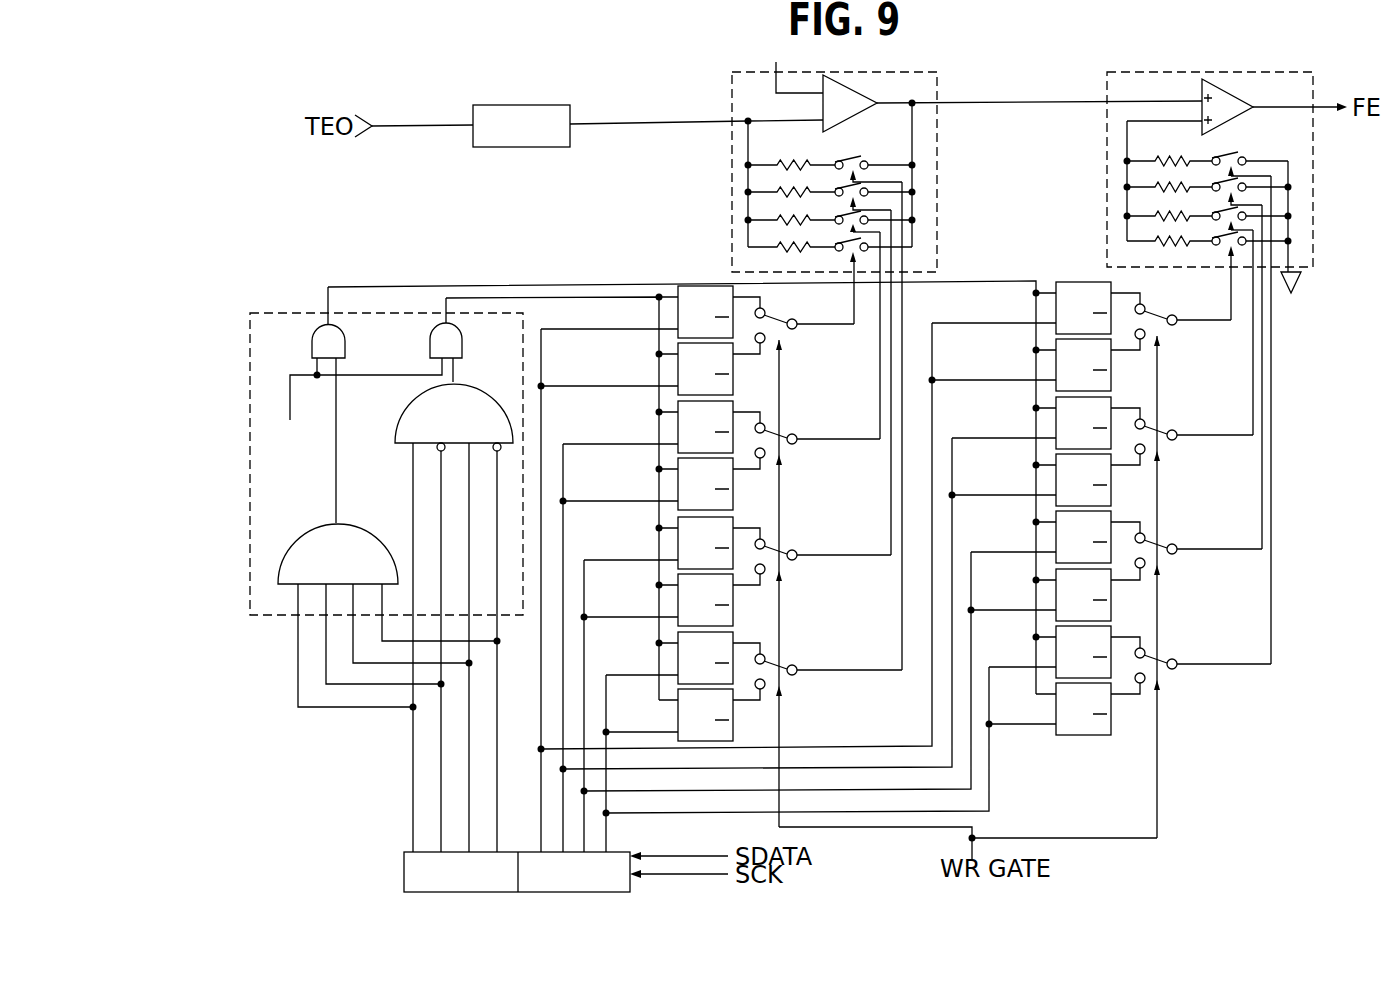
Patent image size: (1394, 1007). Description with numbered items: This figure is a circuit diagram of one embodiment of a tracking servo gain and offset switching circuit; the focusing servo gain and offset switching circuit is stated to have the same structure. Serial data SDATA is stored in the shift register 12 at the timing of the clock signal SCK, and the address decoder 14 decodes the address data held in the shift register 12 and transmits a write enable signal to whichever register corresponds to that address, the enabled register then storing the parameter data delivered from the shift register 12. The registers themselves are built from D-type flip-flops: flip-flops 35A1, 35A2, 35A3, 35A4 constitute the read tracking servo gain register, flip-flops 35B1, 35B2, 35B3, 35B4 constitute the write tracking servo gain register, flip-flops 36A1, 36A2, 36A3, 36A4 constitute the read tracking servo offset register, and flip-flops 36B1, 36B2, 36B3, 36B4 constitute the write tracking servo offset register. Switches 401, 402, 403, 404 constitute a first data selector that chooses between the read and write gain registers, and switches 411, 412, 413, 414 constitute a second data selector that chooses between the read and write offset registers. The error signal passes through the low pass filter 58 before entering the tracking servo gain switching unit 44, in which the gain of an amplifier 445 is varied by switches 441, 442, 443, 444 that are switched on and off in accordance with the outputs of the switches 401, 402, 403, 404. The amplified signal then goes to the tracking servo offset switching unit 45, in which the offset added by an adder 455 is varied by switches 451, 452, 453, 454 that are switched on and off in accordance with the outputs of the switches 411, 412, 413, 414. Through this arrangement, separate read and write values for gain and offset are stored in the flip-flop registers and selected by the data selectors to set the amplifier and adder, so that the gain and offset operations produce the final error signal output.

The shift register 12 is at (404, 868).
The address decoder 14 is at (296, 312).
The low pass filter 58 is at (517, 105).
The tracking servo gain switching unit 44 is at (940, 86).
The switch 441 is at (870, 232).
The switch 442 is at (870, 210).
The switch 443 is at (870, 182).
The switch 444 is at (863, 156).
The amplifier 445 is at (866, 92).
The tracking servo offset switching unit 45 is at (1313, 147).
The switch 451 is at (1246, 230).
The switch 452 is at (1246, 205).
The switch 453 is at (1246, 176).
The switch 454 is at (1239, 151).
The adder 455 is at (1234, 93).
The D-type flip-flop 35A1 is at (678, 318).
The D-type flip-flop 35B1 is at (678, 375).
The D-type flip-flop 35A2 is at (678, 433).
The D-type flip-flop 35B2 is at (678, 490).
The D-type flip-flop 35A3 is at (678, 549).
The D-type flip-flop 35B3 is at (678, 606).
The D-type flip-flop 35A4 is at (678, 664).
The D-type flip-flop 35B4 is at (678, 702).
The D-type flip-flop 36A1 is at (1056, 314).
The D-type flip-flop 36B1 is at (1056, 371).
The D-type flip-flop 36A2 is at (1056, 429).
The D-type flip-flop 36B2 is at (1056, 486).
The D-type flip-flop 36A3 is at (1056, 543).
The D-type flip-flop 36B3 is at (1056, 601).
The D-type flip-flop 36A4 is at (1056, 658).
The D-type flip-flop 36B4 is at (1054, 697).
The switch 401 is at (806, 304).
The switch 402 is at (806, 419).
The switch 403 is at (806, 535).
The switch 404 is at (806, 650).
The switch 411 is at (1179, 300).
The switch 412 is at (1179, 415).
The switch 413 is at (1179, 529).
The switch 414 is at (1179, 644).